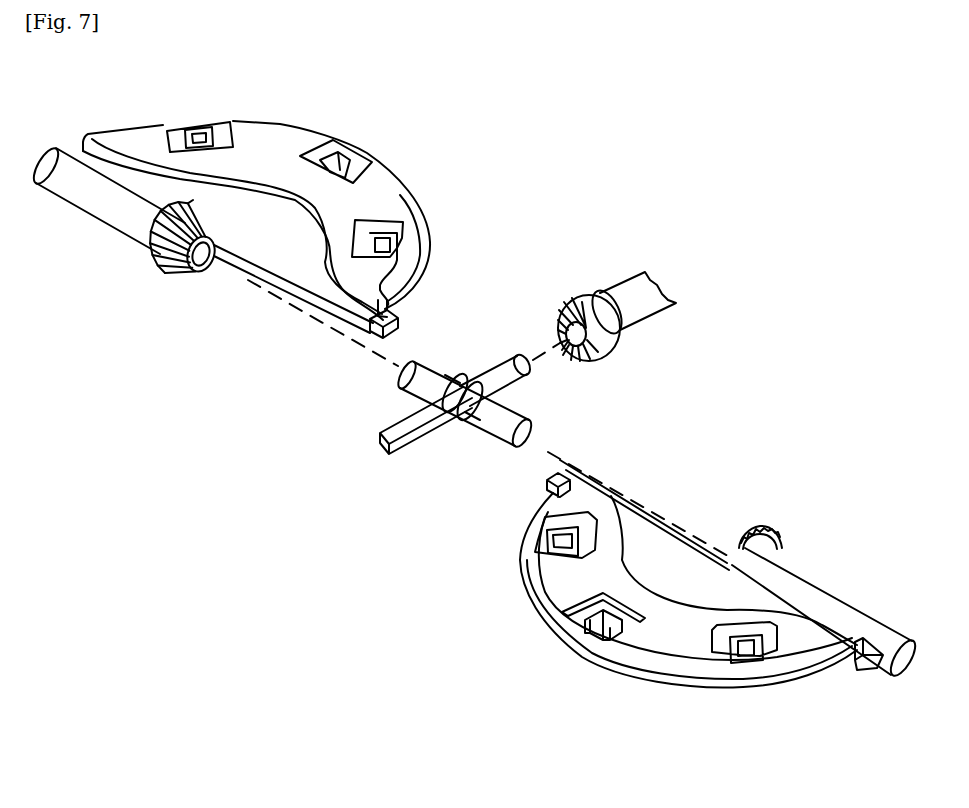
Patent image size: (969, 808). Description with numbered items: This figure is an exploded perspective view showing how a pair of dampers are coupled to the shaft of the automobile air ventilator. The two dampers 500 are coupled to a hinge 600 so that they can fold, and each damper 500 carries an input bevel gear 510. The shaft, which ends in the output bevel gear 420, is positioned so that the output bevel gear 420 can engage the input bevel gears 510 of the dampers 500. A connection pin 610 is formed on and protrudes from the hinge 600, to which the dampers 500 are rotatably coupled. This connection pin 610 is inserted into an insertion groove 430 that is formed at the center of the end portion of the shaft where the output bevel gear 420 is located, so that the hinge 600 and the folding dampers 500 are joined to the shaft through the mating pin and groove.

The damper 500 is at (280, 133).
The input bevel gear 510 is at (183, 266).
The hinge 600 is at (445, 410).
The connection pin 610 is at (510, 375).
The output bevel gear 420 is at (592, 350).
The insertion groove 430 is at (582, 348).